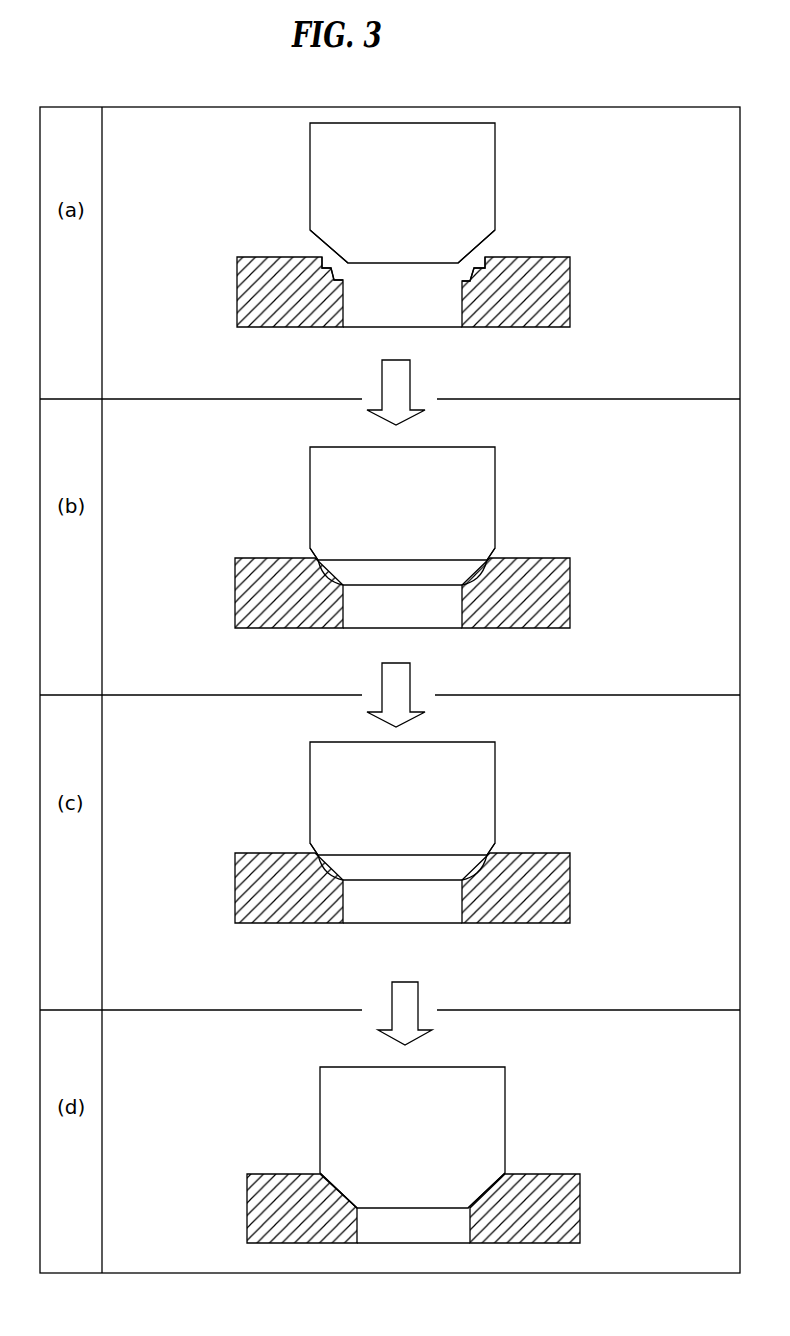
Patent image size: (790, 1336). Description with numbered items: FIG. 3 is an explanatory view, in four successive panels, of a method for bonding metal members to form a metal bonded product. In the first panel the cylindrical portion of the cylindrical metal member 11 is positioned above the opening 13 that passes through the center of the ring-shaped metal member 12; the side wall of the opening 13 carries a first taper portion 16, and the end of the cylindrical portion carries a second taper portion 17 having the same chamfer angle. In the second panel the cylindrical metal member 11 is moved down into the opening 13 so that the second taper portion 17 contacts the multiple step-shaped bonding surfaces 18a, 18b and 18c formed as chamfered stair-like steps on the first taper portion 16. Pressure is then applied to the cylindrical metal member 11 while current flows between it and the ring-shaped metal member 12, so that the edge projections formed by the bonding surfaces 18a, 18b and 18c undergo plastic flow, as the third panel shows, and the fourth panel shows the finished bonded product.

The cylindrical metal member 11 is at (482, 167).
The ring-shaped metal member 12 is at (258, 285).
The opening 13 is at (406, 318).
The first taper portion 16 is at (338, 268).
The second taper portion 17 is at (320, 244).
The step-shaped bonding surface 18a is at (320, 558).
The step-shaped bonding surface 18b is at (335, 570).
The step-shaped bonding surface 18c is at (345, 585).